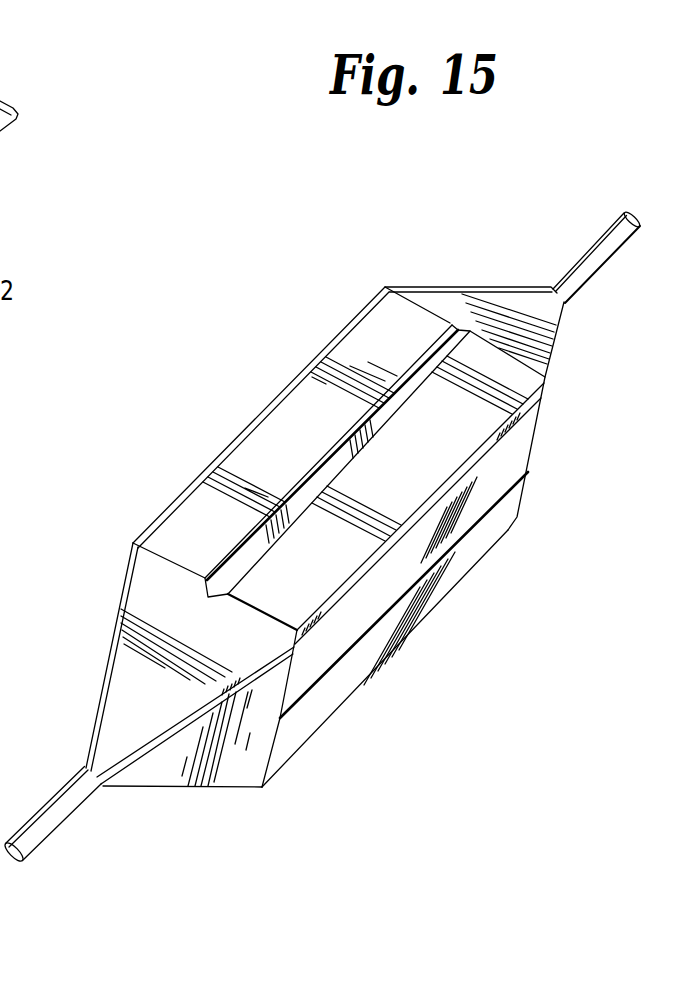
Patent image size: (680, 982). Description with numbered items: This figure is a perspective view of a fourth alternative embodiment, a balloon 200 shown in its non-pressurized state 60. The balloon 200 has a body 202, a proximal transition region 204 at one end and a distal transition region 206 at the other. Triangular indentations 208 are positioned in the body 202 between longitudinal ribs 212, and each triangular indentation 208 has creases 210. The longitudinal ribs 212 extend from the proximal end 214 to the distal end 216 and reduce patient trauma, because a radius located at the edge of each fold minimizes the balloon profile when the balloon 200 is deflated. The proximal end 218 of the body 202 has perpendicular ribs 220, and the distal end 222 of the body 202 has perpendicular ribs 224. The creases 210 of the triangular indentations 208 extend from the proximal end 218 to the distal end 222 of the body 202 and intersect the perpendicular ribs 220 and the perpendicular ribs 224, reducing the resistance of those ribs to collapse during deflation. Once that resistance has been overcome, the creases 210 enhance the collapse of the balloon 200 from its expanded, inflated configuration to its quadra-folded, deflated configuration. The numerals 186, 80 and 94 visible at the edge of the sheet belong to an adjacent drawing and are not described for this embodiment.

The non-pressurized state 60 is at (168, 470).
The balloon 200 is at (473, 226).
The body 202 is at (310, 402).
The proximal transition region 204 is at (168, 794).
The distal transition region 206 is at (515, 283).
The triangular indentations 208 is at (404, 374).
The creases 210 is at (208, 596).
The longitudinal ribs 212 is at (241, 438).
The proximal end 214 is at (102, 788).
The distal end 216 is at (569, 302).
The proximal end of body 218 is at (165, 557).
The perpendicular ribs 220 is at (281, 721).
The distal end of body 222 is at (408, 300).
The perpendicular ribs 224 is at (517, 517).
The adjacent figure element (cut off) 186 is at (0, 199).
The adjacent figure element (cut off) 80 is at (11, 341).
The adjacent figure element (cut off) 94 is at (10, 428).